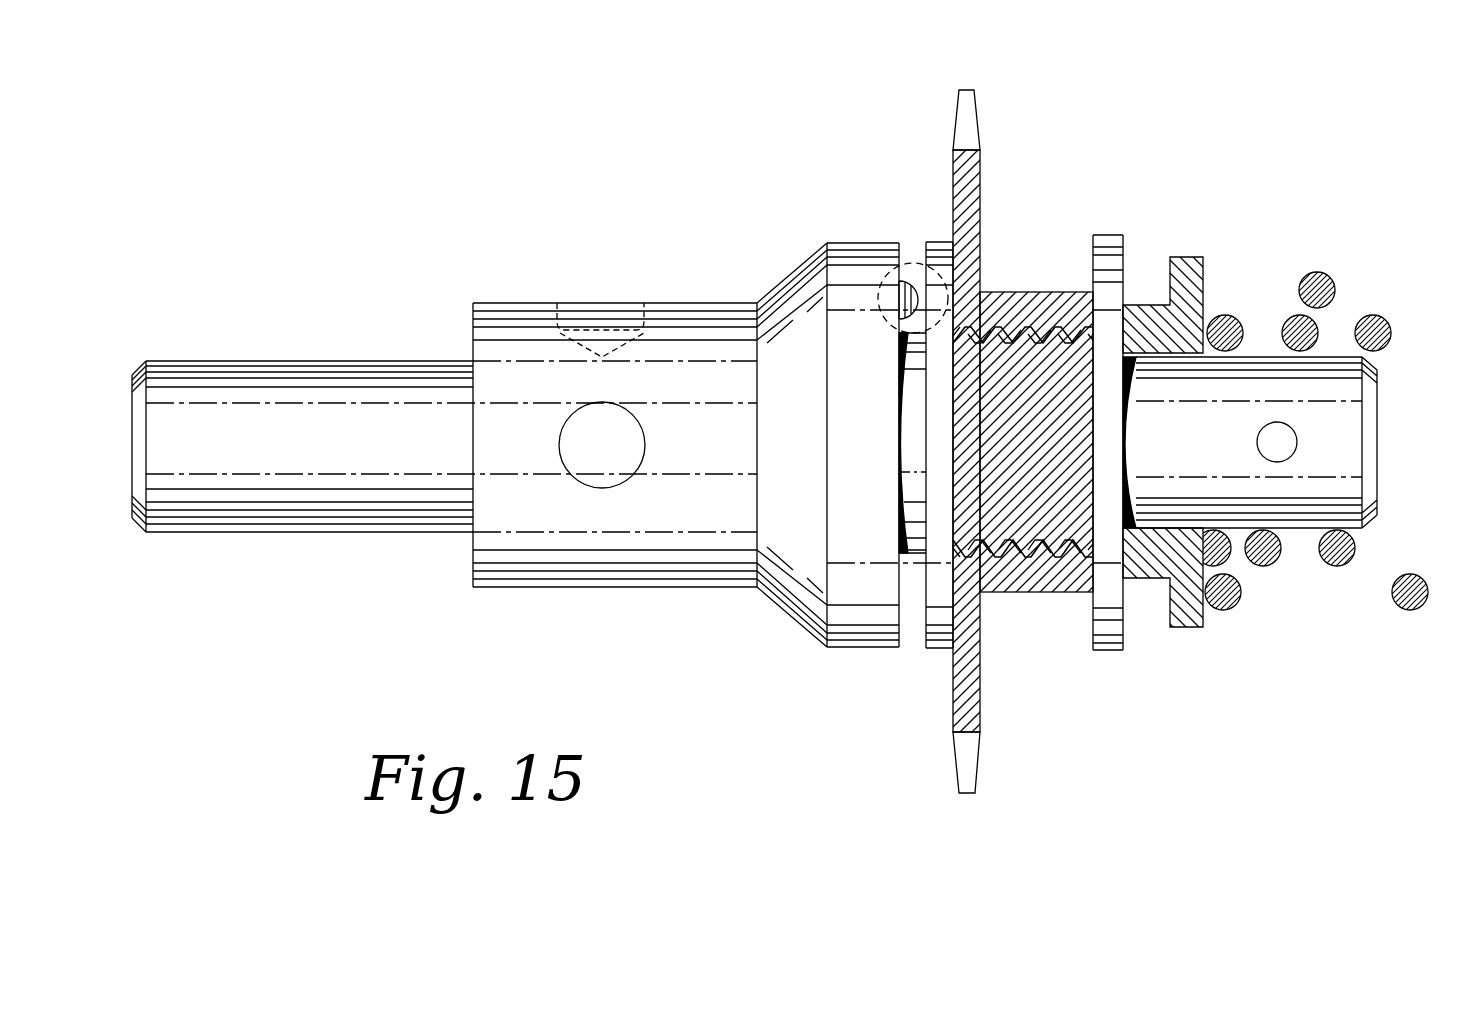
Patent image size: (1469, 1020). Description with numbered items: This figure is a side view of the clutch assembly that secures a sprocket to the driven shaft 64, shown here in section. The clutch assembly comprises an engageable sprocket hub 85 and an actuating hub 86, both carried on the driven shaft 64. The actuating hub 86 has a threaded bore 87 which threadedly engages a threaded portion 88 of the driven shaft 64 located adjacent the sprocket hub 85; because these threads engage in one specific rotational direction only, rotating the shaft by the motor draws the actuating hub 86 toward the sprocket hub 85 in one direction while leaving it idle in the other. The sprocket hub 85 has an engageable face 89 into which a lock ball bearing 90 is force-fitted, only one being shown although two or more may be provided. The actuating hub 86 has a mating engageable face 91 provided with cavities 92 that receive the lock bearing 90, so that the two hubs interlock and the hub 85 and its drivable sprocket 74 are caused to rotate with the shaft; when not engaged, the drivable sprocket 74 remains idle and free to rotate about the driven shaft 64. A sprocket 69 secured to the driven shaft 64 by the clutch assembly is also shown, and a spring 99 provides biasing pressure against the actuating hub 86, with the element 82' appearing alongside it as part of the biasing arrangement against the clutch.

The drivable sprocket 74 is at (968, 125).
The engageable face 89 is at (902, 288).
The lock ball bearing 90 is at (888, 297).
The cavity 92 is at (935, 297).
The sprocket 69 is at (1108, 250).
The spring 99 is at (1228, 325).
The balls 82' is at (1365, 465).
The driven shaft 64 is at (1330, 425).
The threaded bore 87 is at (1040, 333).
The engageable sprocket hub 85 is at (793, 575).
The threaded portion 88 is at (1003, 553).
The actuating hub 86 is at (1148, 600).
The engageable face 91 is at (927, 620).